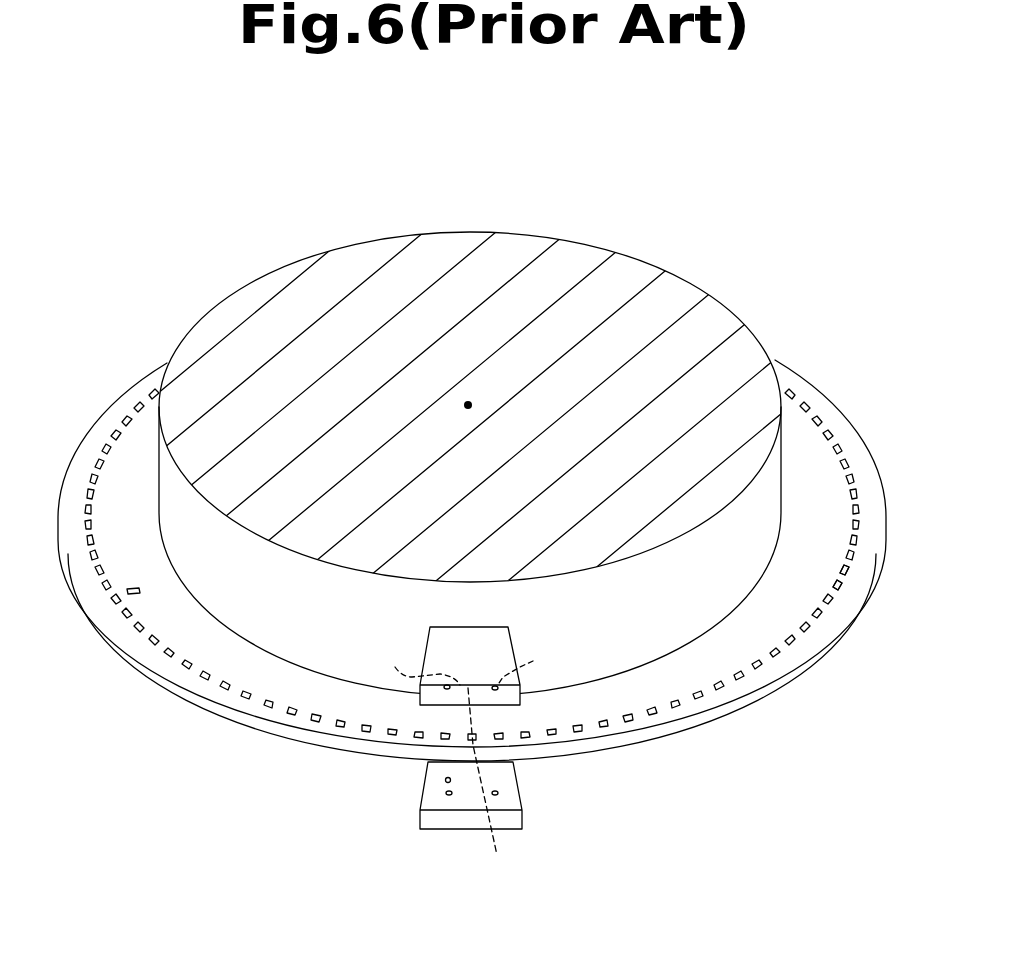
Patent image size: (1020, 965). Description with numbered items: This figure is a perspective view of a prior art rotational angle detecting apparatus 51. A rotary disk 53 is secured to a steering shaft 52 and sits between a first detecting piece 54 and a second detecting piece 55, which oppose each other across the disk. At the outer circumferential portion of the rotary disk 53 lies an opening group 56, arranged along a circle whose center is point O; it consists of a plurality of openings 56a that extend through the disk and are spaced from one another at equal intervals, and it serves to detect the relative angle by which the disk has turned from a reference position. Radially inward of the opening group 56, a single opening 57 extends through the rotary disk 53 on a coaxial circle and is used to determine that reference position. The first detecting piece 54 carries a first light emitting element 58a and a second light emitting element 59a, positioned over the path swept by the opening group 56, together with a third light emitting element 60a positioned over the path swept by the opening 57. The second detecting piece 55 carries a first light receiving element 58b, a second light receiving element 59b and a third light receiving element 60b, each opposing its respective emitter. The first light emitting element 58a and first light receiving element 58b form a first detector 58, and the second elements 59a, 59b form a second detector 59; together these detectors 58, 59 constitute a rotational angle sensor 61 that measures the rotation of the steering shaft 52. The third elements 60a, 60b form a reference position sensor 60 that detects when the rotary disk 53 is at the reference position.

The rotational angle detecting apparatus 51 is at (805, 358).
The steering shaft 52 is at (585, 258).
The rotary disk 53 is at (868, 473).
The first detecting piece 54 is at (458, 637).
The second detecting piece 55 is at (423, 818).
The opening group 56 is at (820, 615).
The openings 56a is at (847, 571).
The opening 57 is at (131, 586).
The first detector 58 is at (363, 630).
The first light emitting element 58a is at (409, 662).
The first light receiving element 58b is at (447, 793).
The second detector 59 is at (592, 630).
The second light emitting element 59a is at (542, 663).
The second light receiving element 59b is at (497, 793).
The reference position sensor 60 is at (547, 893).
The third light emitting element 60a is at (505, 791).
The third light receiving element 60b is at (450, 780).
The rotational angle sensor 61 is at (507, 798).